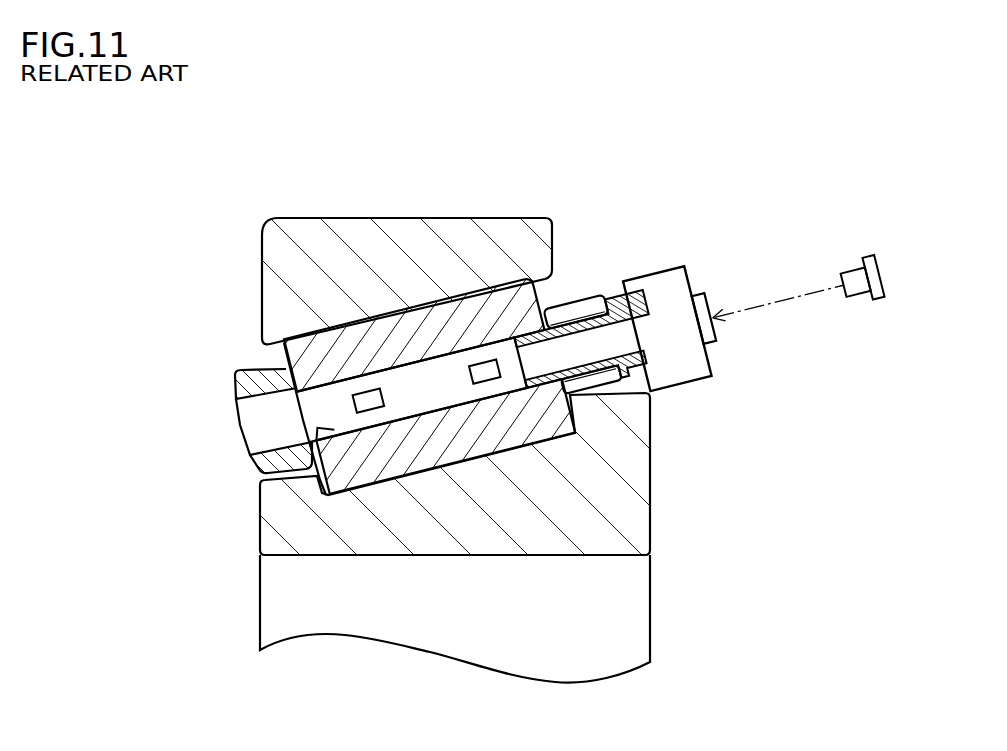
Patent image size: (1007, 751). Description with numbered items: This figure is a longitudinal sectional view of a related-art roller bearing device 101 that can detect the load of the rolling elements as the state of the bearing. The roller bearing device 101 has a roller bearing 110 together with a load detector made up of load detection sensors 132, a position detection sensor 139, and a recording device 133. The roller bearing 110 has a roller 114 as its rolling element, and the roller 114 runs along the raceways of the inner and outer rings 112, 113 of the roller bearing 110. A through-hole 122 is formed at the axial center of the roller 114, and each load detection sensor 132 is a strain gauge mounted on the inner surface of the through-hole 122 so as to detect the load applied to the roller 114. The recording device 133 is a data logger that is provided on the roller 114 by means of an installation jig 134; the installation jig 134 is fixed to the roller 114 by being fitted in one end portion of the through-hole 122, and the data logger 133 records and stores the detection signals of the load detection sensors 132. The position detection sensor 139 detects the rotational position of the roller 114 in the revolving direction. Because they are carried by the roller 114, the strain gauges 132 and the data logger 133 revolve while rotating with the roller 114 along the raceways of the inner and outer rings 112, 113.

The roller bearing device 101 is at (255, 203).
The roller bearing 110 is at (462, 218).
The inner ring 112 is at (327, 222).
The outer ring 113 is at (418, 528).
The roller 114 is at (410, 300).
The through-hole 122 is at (328, 494).
The load detection sensor 132 is at (484, 362).
The recording device 133 is at (666, 268).
The installation jig 134 is at (571, 308).
The position detection sensor 139 is at (791, 247).